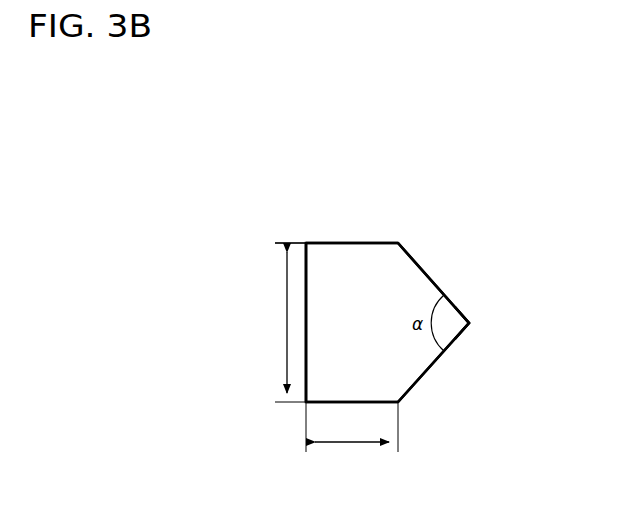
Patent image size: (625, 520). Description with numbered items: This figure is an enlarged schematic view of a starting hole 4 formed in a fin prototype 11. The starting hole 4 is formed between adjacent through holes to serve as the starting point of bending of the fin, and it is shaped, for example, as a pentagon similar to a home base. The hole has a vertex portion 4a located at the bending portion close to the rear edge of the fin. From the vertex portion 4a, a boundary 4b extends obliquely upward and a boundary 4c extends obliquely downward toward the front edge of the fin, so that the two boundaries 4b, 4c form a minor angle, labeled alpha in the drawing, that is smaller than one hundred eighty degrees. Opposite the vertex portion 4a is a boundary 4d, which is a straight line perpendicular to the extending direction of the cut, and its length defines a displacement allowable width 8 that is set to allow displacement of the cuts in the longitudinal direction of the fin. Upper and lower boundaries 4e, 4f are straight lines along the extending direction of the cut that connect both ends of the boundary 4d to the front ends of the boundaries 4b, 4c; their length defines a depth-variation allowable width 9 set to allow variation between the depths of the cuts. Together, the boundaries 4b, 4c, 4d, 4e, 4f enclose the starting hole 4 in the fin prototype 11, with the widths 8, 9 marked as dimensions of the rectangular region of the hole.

The starting hole 4 is at (320, 323).
The vertex portion 4a is at (470, 323).
The boundary 4b is at (427, 276).
The boundary 4c is at (430, 367).
The boundary 4d is at (306, 290).
The boundary 4e is at (352, 243).
The boundary 4f is at (398, 402).
The displacement allowable width 8 is at (288, 322).
The depth-variation allowable width 9 is at (352, 435).
The fin prototype 11 is at (262, 235).